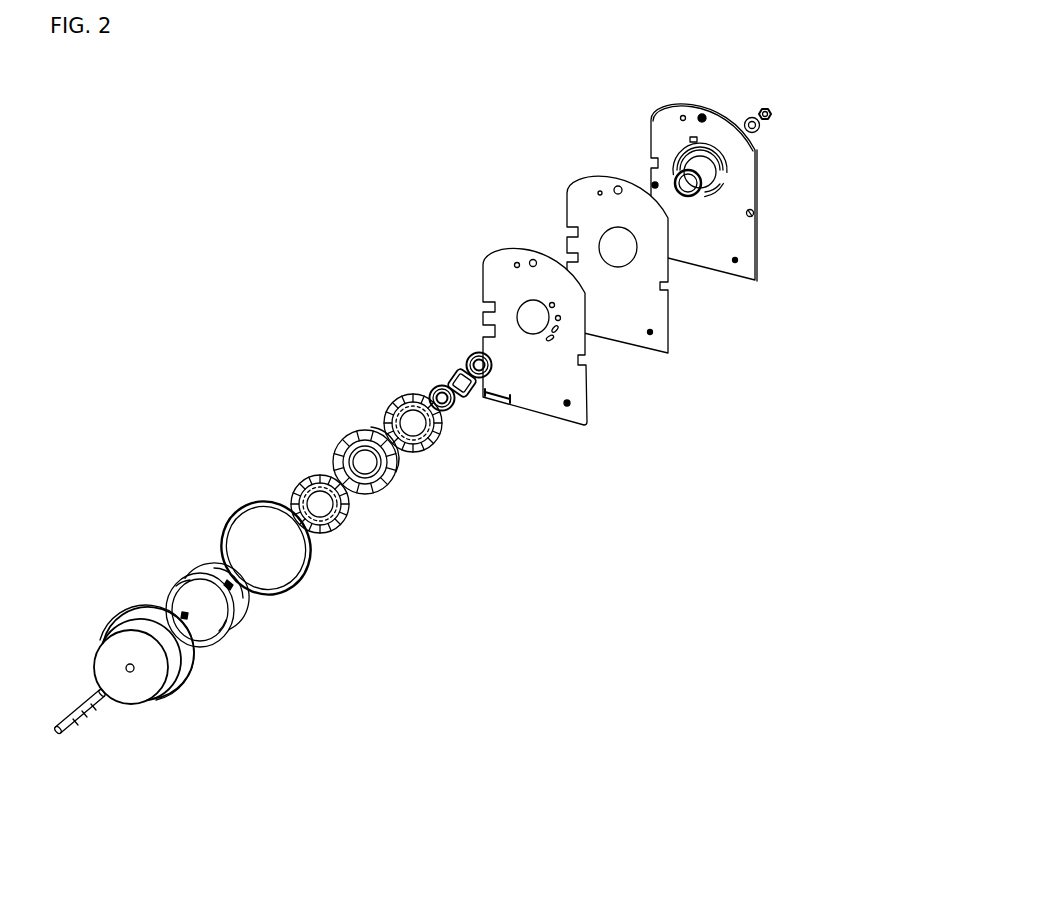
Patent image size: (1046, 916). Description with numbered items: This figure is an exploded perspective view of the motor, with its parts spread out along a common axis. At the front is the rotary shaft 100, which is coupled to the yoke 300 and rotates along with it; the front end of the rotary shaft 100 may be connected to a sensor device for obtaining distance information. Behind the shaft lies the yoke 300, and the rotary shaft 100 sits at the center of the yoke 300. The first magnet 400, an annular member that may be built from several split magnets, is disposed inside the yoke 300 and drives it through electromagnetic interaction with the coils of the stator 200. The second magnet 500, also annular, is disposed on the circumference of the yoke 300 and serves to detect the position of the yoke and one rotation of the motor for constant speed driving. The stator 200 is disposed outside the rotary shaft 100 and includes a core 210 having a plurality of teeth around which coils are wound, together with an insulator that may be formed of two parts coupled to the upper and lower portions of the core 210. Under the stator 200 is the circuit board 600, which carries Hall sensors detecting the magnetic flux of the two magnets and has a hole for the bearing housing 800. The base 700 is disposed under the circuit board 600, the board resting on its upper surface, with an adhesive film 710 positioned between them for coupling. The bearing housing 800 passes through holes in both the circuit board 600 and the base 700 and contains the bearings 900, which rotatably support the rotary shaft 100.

The rotary shaft 100 is at (96, 729).
The stator 200 is at (404, 472).
The core 210 is at (395, 475).
The yoke 300 is at (203, 694).
The first magnet 400 is at (256, 633).
The second magnet 500 is at (324, 583).
The circuit board 600 is at (466, 254).
The base 700 is at (648, 101).
The adhesive film 710 is at (600, 245).
The bearing housing 800 is at (668, 162).
The bearings 900 is at (462, 344).